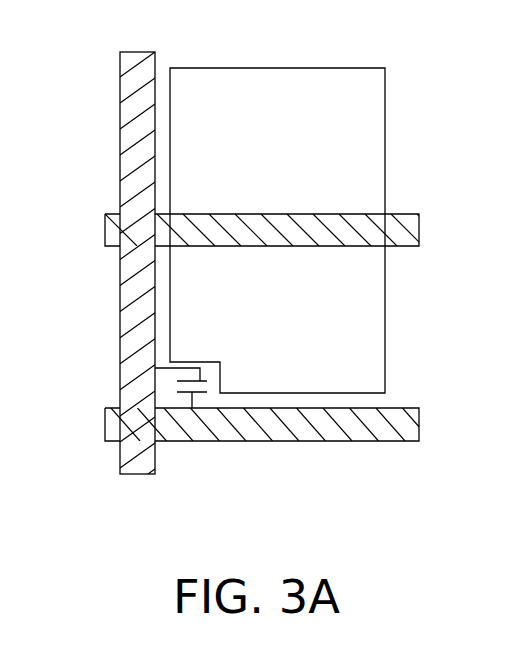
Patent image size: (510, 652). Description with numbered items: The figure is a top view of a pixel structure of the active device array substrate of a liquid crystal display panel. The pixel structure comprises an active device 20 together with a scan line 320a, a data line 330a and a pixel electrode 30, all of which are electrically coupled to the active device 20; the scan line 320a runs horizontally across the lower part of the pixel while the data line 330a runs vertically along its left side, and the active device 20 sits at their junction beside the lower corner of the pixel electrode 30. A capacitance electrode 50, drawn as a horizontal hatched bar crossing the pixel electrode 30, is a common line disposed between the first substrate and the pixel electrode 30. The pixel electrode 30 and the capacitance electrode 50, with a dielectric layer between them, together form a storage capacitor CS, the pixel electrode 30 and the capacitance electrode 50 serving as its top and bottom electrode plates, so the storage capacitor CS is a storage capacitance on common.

The pixel electrode 30 is at (367, 113).
The capacitance electrode 50 is at (112, 233).
The active device 20 is at (173, 387).
The scan line 320a is at (106, 427).
The data line 330a is at (138, 460).
The storage capacitor CS is at (273, 232).